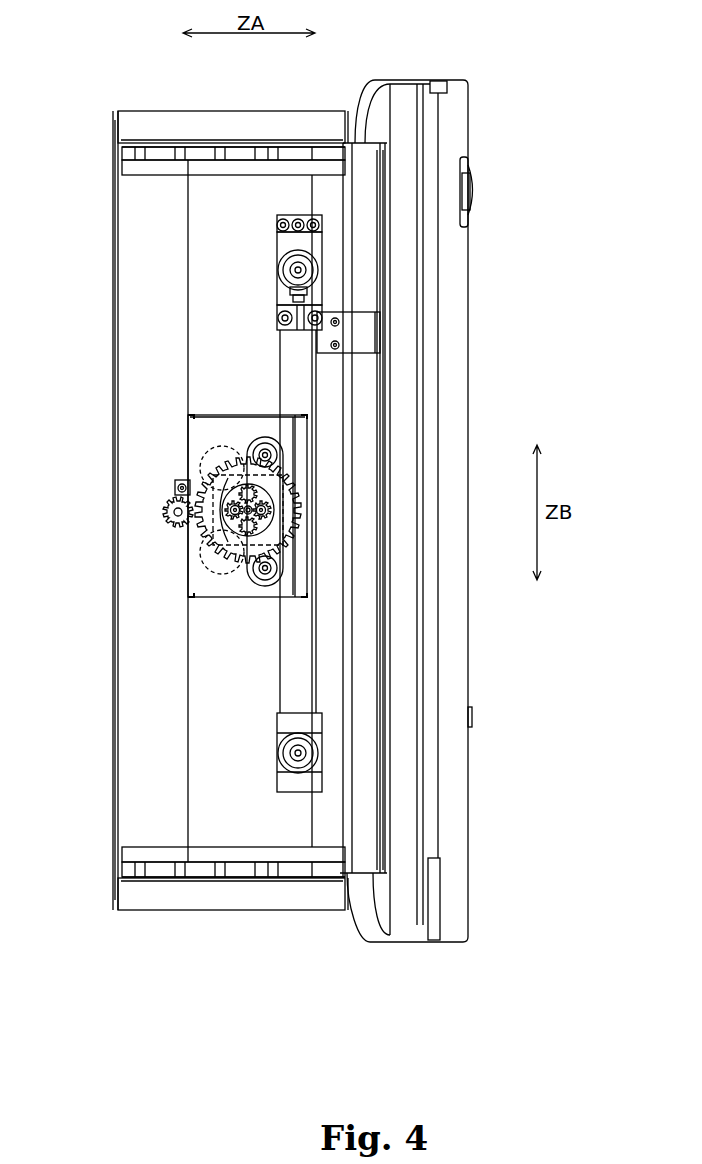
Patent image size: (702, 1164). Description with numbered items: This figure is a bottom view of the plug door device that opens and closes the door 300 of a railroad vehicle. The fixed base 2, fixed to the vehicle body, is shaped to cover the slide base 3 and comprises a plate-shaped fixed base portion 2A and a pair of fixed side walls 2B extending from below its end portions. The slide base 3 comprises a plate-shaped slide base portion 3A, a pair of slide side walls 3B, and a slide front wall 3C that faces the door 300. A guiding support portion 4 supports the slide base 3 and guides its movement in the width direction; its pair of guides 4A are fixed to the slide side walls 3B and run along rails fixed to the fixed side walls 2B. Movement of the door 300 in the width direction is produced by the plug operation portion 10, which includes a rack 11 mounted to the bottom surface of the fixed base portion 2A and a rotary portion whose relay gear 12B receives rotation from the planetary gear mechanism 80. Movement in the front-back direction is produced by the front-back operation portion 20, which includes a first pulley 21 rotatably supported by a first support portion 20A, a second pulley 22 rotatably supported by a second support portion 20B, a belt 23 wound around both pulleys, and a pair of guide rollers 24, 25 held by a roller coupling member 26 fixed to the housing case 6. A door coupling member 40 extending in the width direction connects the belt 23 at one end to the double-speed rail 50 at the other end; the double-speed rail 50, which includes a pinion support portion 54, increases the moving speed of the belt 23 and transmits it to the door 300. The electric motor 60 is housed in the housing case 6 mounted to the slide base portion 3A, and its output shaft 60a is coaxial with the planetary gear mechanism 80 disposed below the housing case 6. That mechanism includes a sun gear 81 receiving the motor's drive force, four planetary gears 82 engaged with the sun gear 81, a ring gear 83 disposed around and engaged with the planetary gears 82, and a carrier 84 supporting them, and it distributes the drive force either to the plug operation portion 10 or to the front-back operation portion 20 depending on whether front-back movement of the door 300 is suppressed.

The fixed base 2 is at (118, 340).
The fixed base portion 2A is at (122, 370).
The fixed side walls 2B is at (190, 110).
The slide base 3 is at (188, 275).
The slide base portion 3A is at (188, 320).
The slide side walls 3B is at (157, 171).
The slide front wall 3C is at (348, 498).
The guiding support portion 4 is at (302, 104).
The guides 4A is at (137, 152).
The housing case 6 is at (222, 415).
The plug operation portion 10 is at (158, 494).
The rack 11 is at (175, 483).
The relay gear 12B is at (180, 525).
The front-back operation portion 20 is at (266, 331).
The first support portion 20A is at (293, 785).
The second support portion 20B is at (289, 214).
The first pulley 21 is at (280, 760).
The second pulley 22 is at (279, 254).
The belt 23 is at (280, 666).
The guide roller 24 is at (265, 598).
The guide roller 25 is at (263, 415).
The roller coupling member 26 is at (272, 460).
The door coupling member 40 is at (363, 342).
The double-speed rail 50 is at (385, 253).
The pinion support portion 54 is at (385, 293).
The electric motor 60 is at (240, 445).
The output shaft 60a is at (262, 509).
The planetary gear mechanism 80 is at (180, 444).
The sun gear 81 is at (240, 590).
The planetary gears 82 is at (215, 468).
The ring gear 83 is at (225, 530).
The carrier 84 is at (225, 578).
The door 300 is at (465, 601).